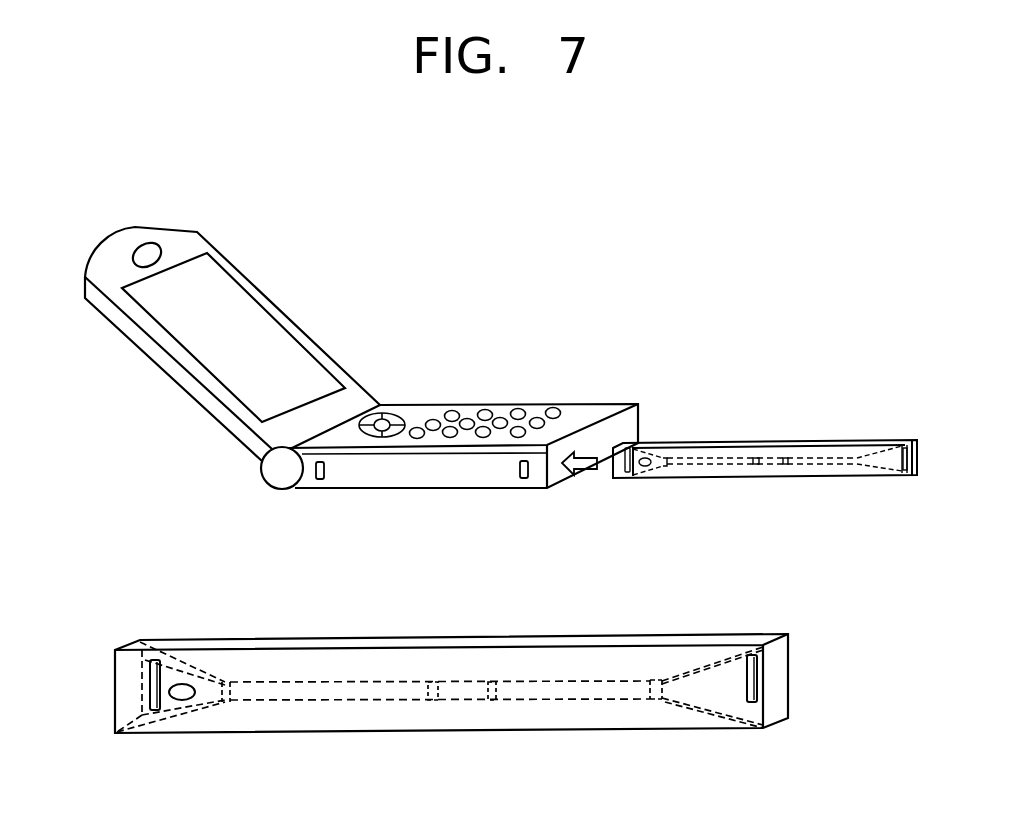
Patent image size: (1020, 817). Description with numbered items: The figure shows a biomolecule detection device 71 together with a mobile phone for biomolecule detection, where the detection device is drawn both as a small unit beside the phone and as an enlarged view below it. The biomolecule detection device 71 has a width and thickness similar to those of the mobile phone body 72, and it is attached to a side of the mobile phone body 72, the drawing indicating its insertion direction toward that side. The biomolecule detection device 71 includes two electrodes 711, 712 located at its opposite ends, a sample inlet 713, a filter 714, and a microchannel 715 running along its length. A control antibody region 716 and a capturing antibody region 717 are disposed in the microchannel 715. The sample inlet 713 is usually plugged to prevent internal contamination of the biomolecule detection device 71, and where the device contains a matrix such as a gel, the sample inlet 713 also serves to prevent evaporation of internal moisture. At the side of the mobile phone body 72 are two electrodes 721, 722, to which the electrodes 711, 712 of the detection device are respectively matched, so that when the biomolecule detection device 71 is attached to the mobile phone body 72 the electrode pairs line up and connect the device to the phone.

The biomolecule detection device 71 is at (773, 442).
The mobile phone body 72 is at (500, 410).
The electrode 711 is at (153, 685).
The electrode 712 is at (753, 680).
The sample inlet 713 is at (182, 684).
The filter 714 is at (225, 682).
The microchannel 715 is at (338, 692).
The control antibody region 716 is at (433, 675).
The capturing antibody region 717 is at (492, 675).
The electrode 721 is at (320, 481).
The electrode 722 is at (524, 480).